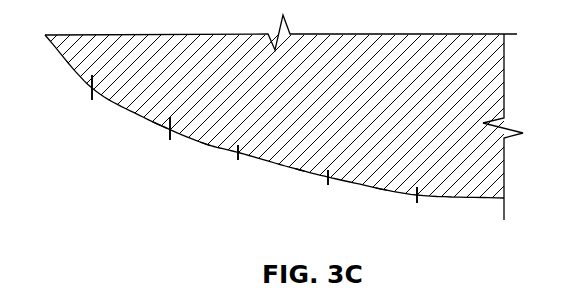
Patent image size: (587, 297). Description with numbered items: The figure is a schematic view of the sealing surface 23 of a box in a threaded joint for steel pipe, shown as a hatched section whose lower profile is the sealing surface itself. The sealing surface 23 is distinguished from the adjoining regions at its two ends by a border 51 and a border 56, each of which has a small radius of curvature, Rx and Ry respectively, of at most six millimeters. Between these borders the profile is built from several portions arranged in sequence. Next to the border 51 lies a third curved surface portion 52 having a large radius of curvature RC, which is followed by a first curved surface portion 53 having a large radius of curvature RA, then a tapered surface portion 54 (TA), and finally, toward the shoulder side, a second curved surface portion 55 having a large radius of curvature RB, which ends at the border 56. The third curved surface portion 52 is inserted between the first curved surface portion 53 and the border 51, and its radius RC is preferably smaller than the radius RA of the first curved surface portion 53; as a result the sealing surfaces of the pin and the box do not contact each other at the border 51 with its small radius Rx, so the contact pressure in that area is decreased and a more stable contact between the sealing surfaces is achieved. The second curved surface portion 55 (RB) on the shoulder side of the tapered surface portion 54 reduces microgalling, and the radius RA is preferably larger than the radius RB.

The sealing surface 23 is at (252, 170).
The border 51 is at (92, 88).
The third curved surface portion with a large radius of curvature 52 is at (160, 126).
The first curved surface portion with a large radius of curvature 53 is at (206, 144).
The tapered surface portion 54 is at (300, 170).
The second curved surface portion with a large radius of curvature 55 is at (380, 190).
The border 56 is at (417, 196).
The small radius of curvature Rx is at (93, 109).
The small radius of curvature Ry is at (420, 216).
The large radius of curvature of the third curved surface portion RC is at (144, 101).
The large radius of curvature of the first curved surface portion RA is at (214, 126).
The tapered surface portion TA is at (283, 150).
The large radius of curvature of the second curved surface portion RB is at (388, 171).